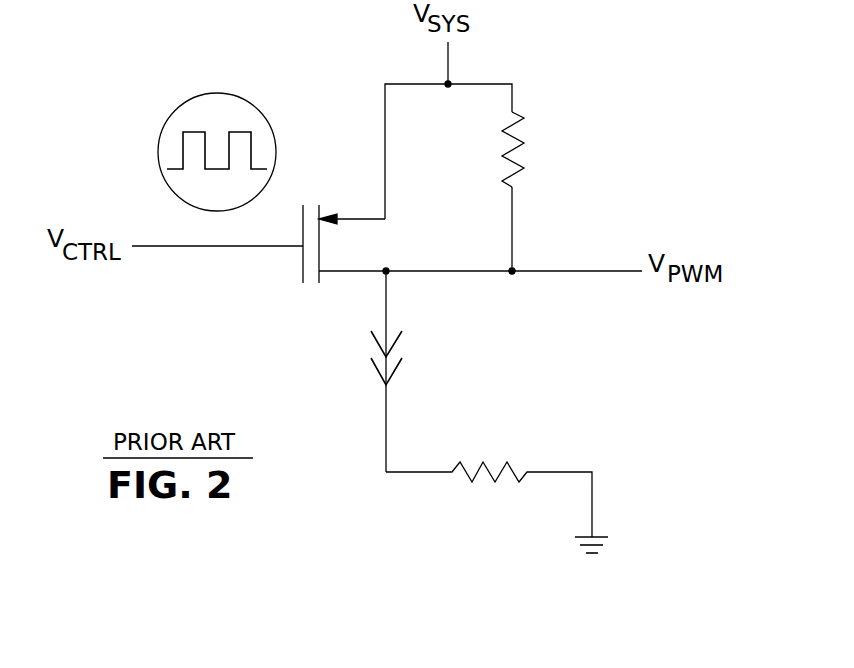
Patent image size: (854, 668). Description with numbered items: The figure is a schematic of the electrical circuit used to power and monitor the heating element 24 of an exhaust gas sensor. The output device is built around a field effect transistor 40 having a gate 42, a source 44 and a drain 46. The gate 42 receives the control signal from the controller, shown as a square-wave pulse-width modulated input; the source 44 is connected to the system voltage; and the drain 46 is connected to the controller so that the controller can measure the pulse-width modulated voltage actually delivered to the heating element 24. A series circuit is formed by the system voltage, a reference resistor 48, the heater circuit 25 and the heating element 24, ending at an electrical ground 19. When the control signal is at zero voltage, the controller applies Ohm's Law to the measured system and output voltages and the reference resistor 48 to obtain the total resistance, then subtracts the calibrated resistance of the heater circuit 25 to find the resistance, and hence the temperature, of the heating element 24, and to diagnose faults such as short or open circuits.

The electrical ground 19 is at (600, 545).
The heating element 24 is at (485, 480).
The heater circuit 25 is at (407, 308).
The field effect transistor 40 is at (312, 283).
The gate 42 is at (220, 246).
The source 44 is at (355, 219).
The drain 46 is at (358, 271).
The reference resistor 48 is at (522, 137).